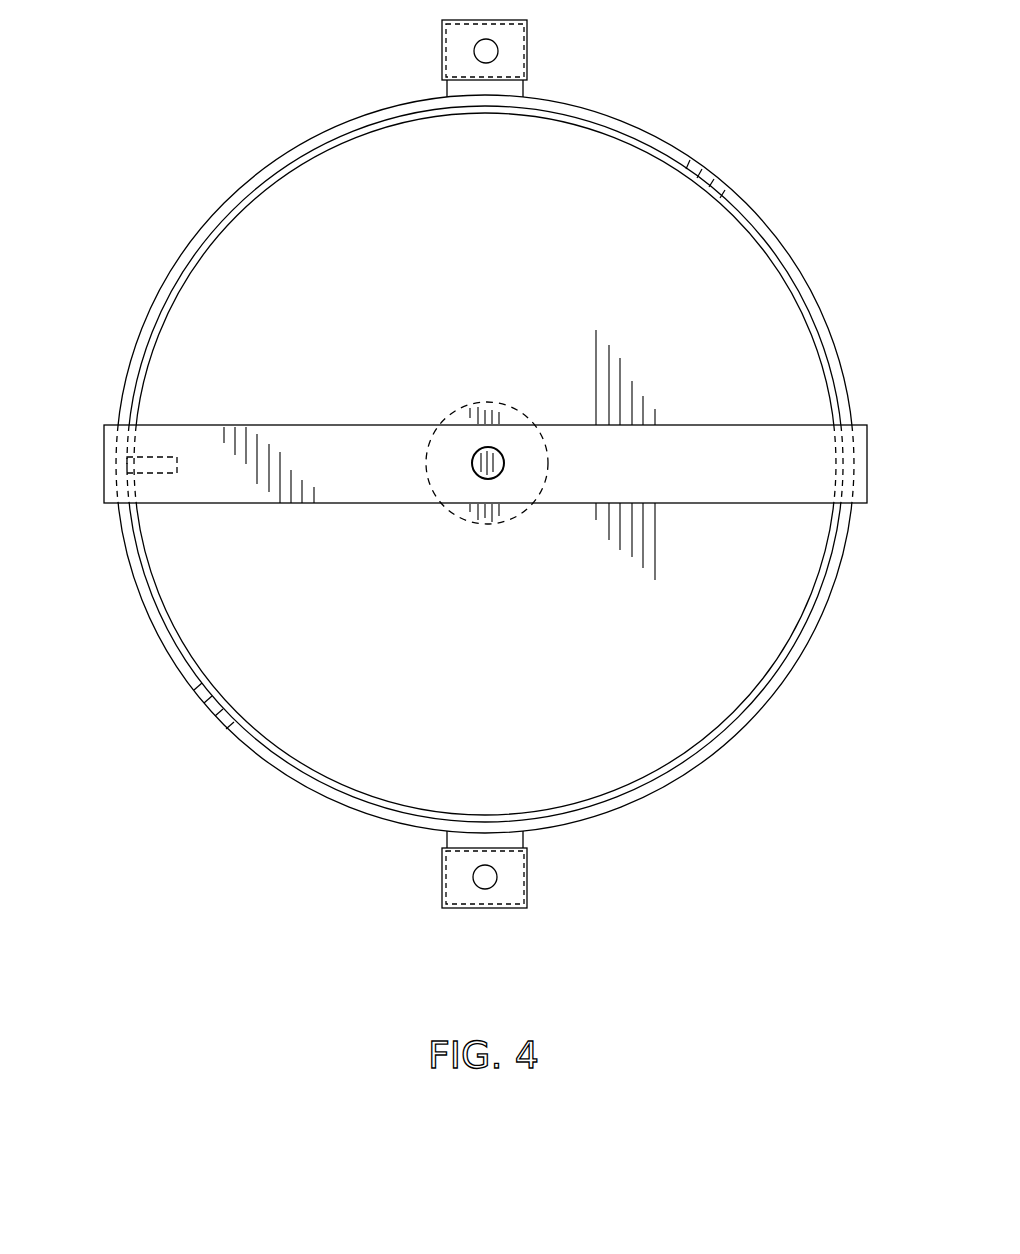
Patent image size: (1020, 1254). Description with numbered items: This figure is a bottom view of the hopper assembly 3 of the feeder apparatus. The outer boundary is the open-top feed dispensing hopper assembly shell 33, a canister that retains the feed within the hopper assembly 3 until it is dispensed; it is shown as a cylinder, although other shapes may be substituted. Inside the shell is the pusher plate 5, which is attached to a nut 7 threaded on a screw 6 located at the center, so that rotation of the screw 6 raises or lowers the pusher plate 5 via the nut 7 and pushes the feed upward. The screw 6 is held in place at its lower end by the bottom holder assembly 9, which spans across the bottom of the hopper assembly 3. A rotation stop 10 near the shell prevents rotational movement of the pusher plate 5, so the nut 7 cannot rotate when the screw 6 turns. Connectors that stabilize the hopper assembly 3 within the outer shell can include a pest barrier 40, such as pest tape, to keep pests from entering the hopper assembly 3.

The hopper assembly 3 is at (214, 747).
The pusher plate 5 is at (346, 757).
The screw 6 is at (493, 450).
The nut 7 is at (518, 517).
The bottom holder assembly 9 is at (335, 425).
The rotation stop 10 is at (150, 475).
The hopper assembly shell 33 is at (163, 654).
The pest barrier 40 is at (514, 40).